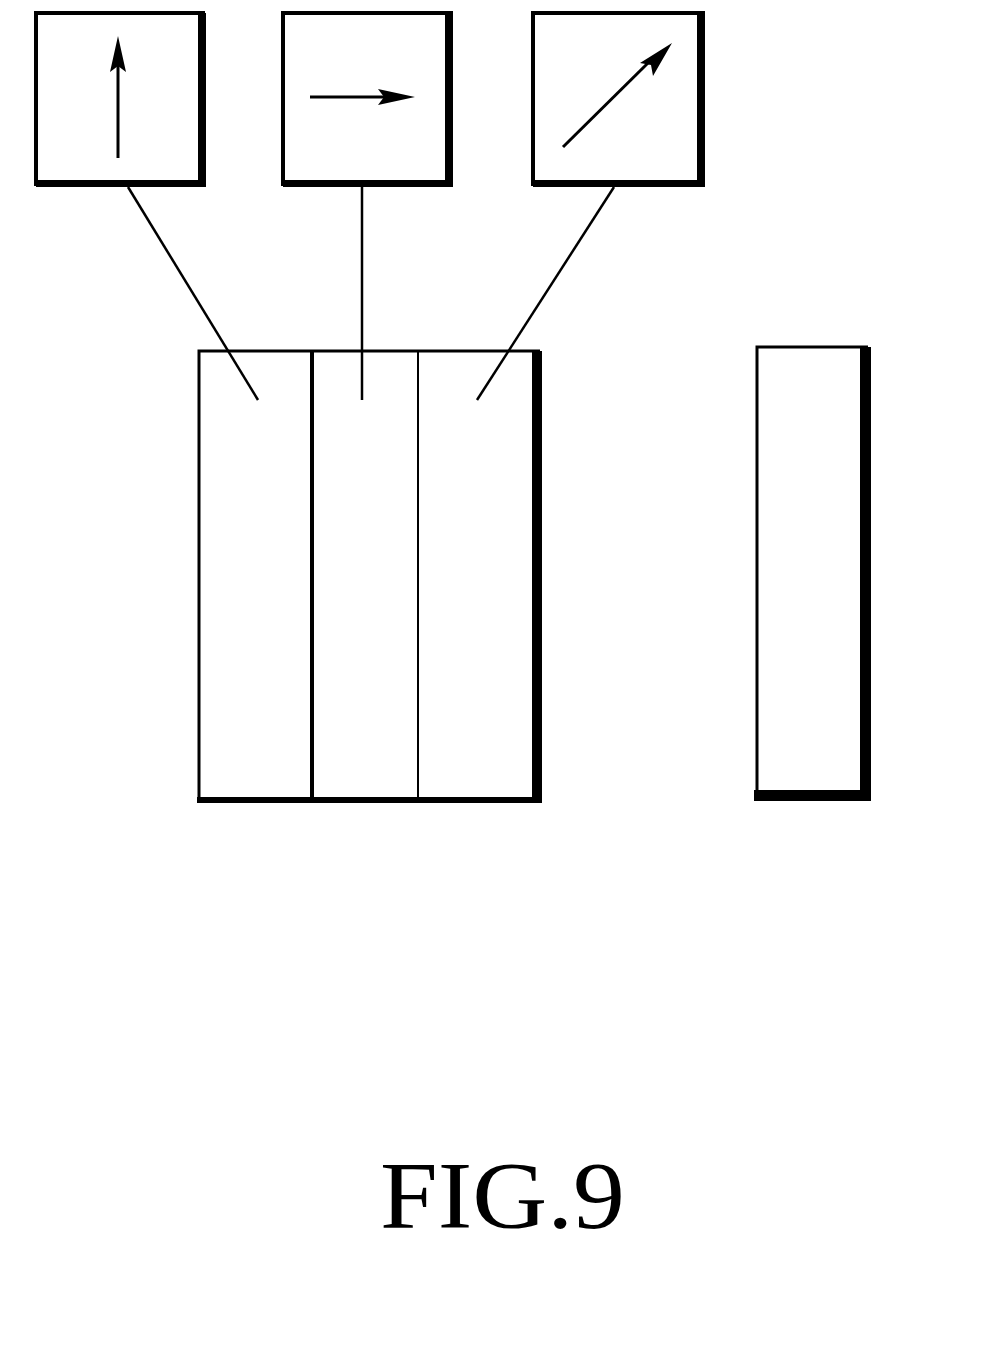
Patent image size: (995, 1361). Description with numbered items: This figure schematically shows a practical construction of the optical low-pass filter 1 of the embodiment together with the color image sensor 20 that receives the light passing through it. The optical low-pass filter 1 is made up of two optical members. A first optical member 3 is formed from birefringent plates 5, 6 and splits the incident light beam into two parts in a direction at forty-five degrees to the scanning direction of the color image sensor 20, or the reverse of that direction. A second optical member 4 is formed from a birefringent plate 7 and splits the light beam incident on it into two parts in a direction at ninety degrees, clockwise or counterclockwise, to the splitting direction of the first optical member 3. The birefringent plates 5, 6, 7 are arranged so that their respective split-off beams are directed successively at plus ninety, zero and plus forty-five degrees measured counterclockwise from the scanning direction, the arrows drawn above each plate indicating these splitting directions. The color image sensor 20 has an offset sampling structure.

The optical low-pass filter 1 is at (197, 385).
The first optical member 3 is at (400, 945).
The second optical member 4 is at (518, 945).
The birefringent plate 5 is at (268, 803).
The birefringent plate 6 is at (373, 803).
The birefringent plate 7 is at (485, 803).
The color image sensor 20 is at (823, 347).